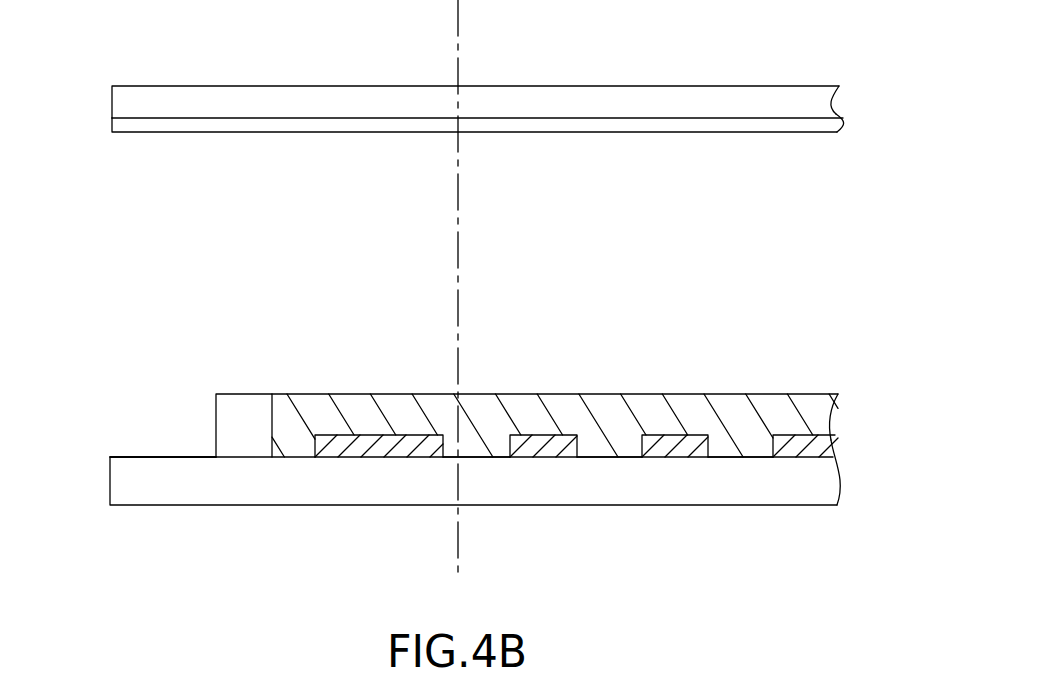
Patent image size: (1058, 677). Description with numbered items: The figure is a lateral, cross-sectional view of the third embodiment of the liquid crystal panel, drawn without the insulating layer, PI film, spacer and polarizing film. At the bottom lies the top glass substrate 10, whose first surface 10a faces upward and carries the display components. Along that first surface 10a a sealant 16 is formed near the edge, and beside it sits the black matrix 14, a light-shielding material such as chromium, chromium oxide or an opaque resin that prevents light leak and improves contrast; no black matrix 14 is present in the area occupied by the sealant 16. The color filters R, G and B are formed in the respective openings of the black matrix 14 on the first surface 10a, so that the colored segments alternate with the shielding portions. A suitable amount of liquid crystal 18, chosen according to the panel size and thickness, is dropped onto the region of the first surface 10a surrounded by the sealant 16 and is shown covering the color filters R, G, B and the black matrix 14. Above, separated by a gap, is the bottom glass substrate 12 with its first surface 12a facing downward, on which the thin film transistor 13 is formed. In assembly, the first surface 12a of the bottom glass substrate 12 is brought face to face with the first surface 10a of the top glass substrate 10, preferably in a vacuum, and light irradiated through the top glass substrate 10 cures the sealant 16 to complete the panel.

The top glass substrate 10 is at (188, 491).
The first surface of the top glass substrate 10a is at (152, 457).
The bottom glass substrate 12 is at (130, 100).
The first surface of the bottom glass substrate 12a is at (152, 118).
The thin film transistor 13 is at (130, 128).
The black matrix 14 is at (398, 440).
The sealant 16 is at (257, 432).
The liquid crystal 18 is at (827, 412).
The red color filter R is at (480, 445).
The green color filter G is at (622, 447).
The blue color filter B is at (740, 447).